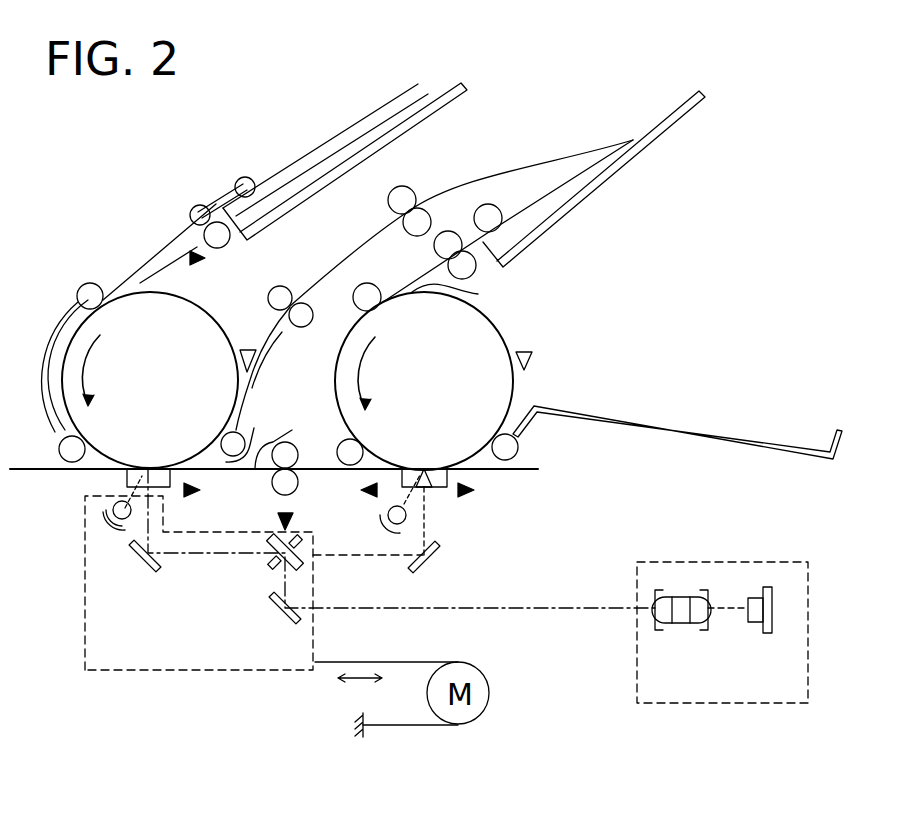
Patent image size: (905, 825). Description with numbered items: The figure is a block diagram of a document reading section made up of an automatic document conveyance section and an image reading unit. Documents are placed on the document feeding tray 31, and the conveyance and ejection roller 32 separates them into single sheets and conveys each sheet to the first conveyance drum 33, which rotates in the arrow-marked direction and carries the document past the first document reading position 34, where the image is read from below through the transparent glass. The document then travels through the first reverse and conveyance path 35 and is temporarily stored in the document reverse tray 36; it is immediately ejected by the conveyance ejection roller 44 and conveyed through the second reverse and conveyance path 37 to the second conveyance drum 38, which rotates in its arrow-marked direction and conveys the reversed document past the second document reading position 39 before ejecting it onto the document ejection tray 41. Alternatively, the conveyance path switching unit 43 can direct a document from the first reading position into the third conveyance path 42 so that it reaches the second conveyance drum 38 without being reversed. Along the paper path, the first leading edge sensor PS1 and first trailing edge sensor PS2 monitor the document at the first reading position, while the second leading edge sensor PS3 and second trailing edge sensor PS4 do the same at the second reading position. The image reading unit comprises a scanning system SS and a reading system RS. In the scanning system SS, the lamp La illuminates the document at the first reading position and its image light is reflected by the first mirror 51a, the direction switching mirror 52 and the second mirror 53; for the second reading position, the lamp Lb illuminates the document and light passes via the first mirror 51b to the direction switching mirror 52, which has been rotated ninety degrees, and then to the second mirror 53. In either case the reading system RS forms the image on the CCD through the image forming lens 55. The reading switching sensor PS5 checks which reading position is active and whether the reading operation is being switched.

The document feeding tray 31 is at (425, 122).
The conveyance and ejection roller 32 is at (215, 200).
The first conveyance drum 33 is at (203, 313).
The first document reading position 34 is at (125, 478).
The first reverse and conveyance path 35 is at (347, 259).
The document reverse tray 36 is at (663, 130).
The second reverse and conveyance path 37 is at (463, 293).
The second conveyance drum 38 is at (495, 328).
The second document reading position 39 is at (425, 472).
The document ejection tray 41 is at (627, 430).
The third conveyance path 42 is at (292, 440).
The conveyance path switching unit 43 is at (252, 440).
The conveyance ejection roller 44 is at (486, 206).
The first mirror 51a is at (138, 568).
The first mirror 51b is at (438, 562).
The direction switching mirror 52 is at (270, 540).
The second mirror 53 is at (272, 614).
The image forming lens 55 is at (678, 625).
The first leading edge sensor PS1 is at (207, 258).
The first trailing edge sensor PS2 is at (201, 490).
The second leading edge sensor PS3 is at (367, 498).
The second trailing edge sensor PS4 is at (475, 490).
The reading switching sensor PS5 is at (277, 518).
The lamp La is at (113, 532).
The lamp Lb is at (383, 530).
The scanning system SS is at (175, 672).
The reading system RS is at (718, 704).
The element CCD is at (755, 625).